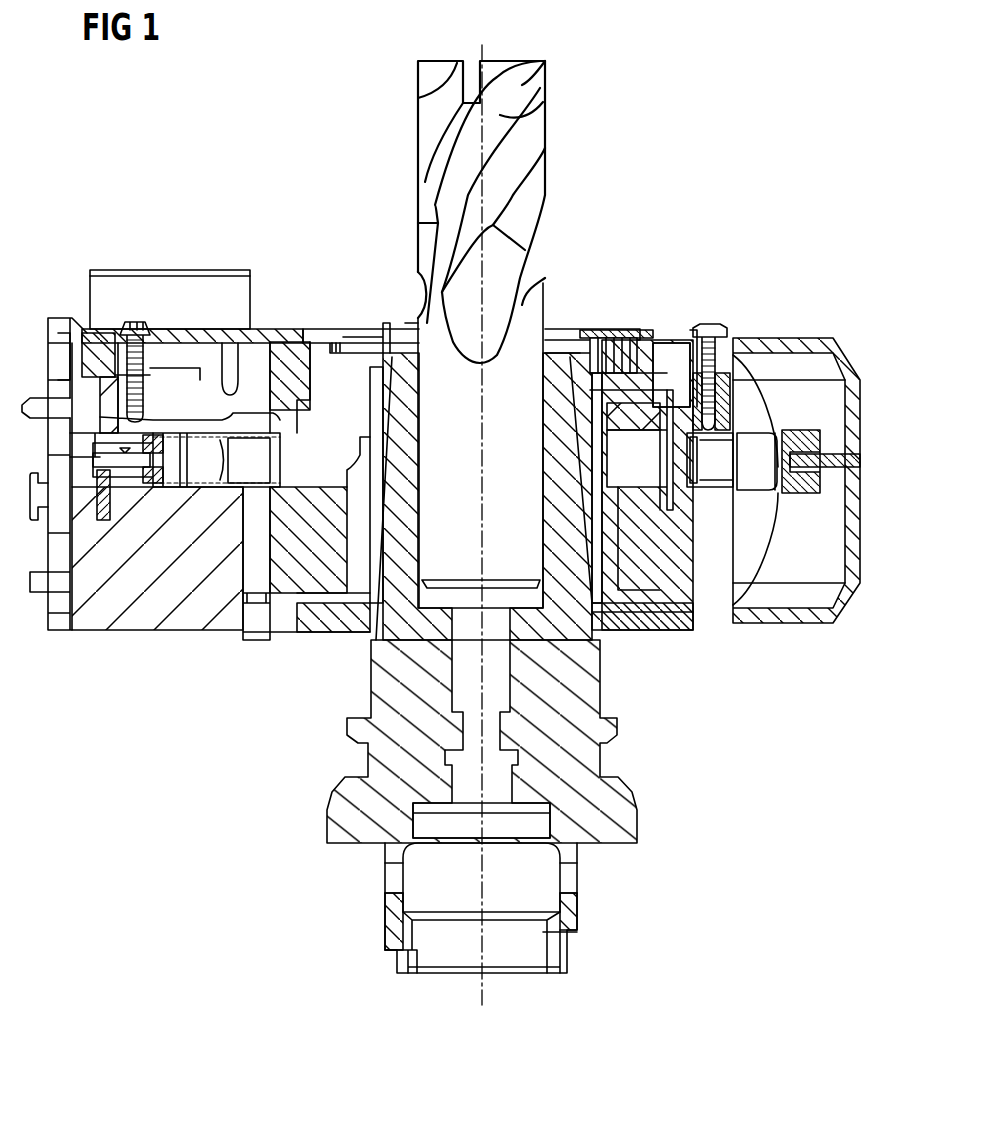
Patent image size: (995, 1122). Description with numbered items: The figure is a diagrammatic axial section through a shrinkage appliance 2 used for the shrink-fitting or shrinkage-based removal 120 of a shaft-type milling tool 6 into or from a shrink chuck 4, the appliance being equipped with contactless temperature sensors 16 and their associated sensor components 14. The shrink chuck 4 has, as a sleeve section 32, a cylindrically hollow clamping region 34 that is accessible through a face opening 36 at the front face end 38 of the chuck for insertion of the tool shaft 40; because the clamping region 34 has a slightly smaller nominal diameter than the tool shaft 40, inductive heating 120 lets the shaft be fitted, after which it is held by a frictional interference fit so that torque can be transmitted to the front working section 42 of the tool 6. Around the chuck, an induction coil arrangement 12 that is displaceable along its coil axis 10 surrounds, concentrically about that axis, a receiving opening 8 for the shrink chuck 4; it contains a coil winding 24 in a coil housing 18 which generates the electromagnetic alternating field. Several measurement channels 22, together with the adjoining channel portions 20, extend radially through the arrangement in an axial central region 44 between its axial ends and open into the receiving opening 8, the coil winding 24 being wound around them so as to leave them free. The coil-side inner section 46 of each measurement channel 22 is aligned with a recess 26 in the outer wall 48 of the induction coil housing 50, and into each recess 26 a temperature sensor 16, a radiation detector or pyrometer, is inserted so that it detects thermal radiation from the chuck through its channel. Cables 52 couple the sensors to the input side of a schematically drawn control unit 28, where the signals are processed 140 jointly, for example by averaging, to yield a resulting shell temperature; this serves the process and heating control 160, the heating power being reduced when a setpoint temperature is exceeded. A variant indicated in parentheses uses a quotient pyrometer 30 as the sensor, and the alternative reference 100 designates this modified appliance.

The shrinkage appliance 2 is at (449, 546).
The tool holder assembly variant 100 is at (449, 546).
The shrink-fitting or shrinkage-based removal / inductive heating 120 is at (449, 546).
The shrink chuck 4 is at (580, 662).
The milling tool 6 is at (502, 425).
The receiving opening 8 is at (403, 297).
The coil axis 10 is at (480, 963).
The induction coil arrangement 12 is at (283, 300).
The bolt 14 is at (458, 447).
The temperature sensor 16 is at (200, 463).
The coil housing 18 is at (679, 612).
The clamping plate 20 is at (542, 381).
The measurement channel 22 is at (315, 435).
The coil winding 24 is at (306, 524).
The recess 26 is at (745, 500).
The control unit 28 is at (160, 287).
The quotient pyrometer 30 is at (458, 447).
The sleeve section 32 is at (592, 345).
The clamping region 34 is at (408, 355).
The face opening 36 is at (562, 343).
The front face end 38 is at (611, 308).
The tool shaft 40 is at (522, 302).
The front working section 42 is at (500, 115).
The axial central region 44 is at (238, 540).
The coil-side inner section 46 is at (300, 618).
The outer wall 48 is at (682, 518).
The induction coil housing 50 is at (727, 607).
The cable 52 is at (108, 455).
The processing of measurement signals 140 is at (142, 243).
The process and heating control 160 is at (142, 243).